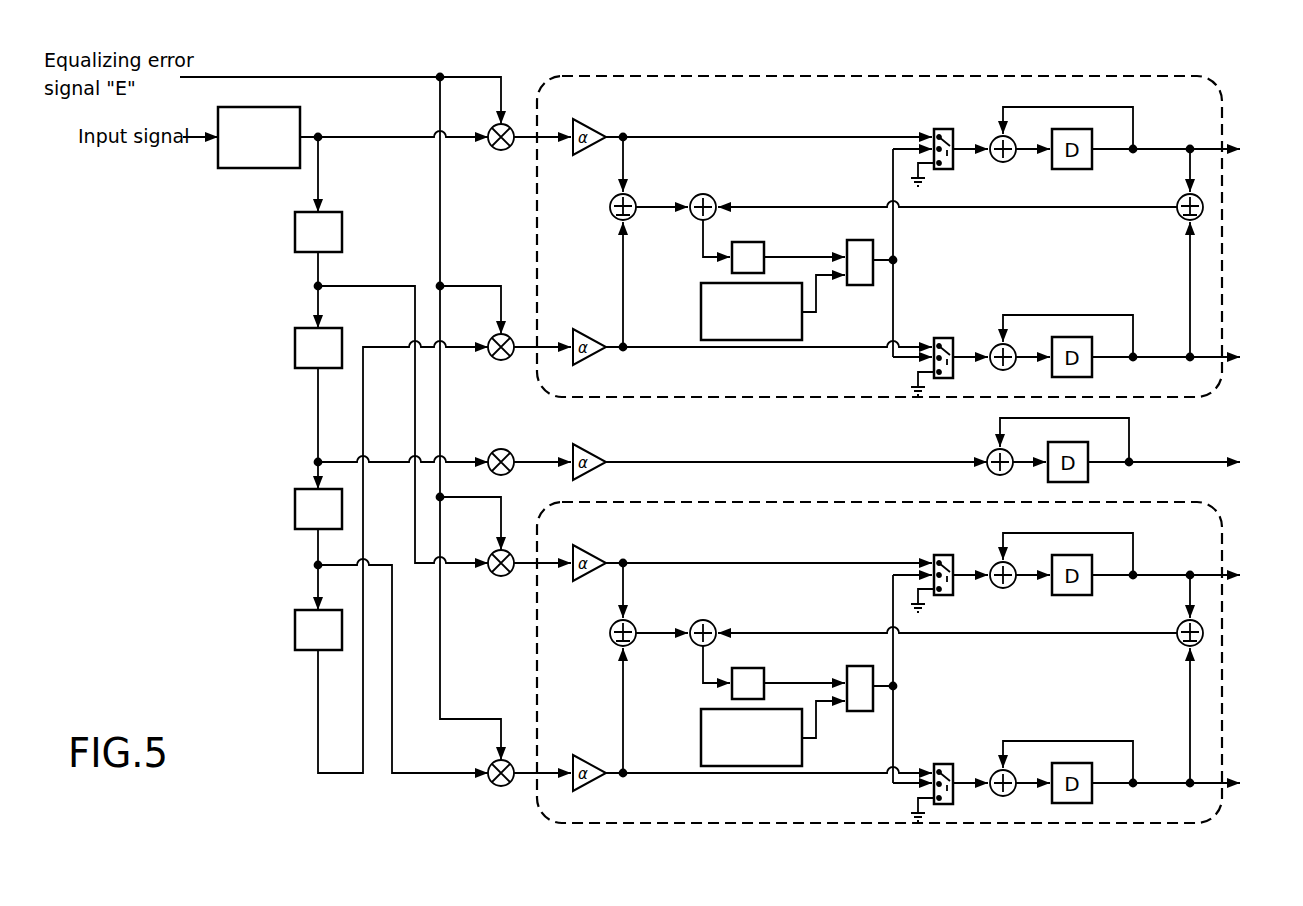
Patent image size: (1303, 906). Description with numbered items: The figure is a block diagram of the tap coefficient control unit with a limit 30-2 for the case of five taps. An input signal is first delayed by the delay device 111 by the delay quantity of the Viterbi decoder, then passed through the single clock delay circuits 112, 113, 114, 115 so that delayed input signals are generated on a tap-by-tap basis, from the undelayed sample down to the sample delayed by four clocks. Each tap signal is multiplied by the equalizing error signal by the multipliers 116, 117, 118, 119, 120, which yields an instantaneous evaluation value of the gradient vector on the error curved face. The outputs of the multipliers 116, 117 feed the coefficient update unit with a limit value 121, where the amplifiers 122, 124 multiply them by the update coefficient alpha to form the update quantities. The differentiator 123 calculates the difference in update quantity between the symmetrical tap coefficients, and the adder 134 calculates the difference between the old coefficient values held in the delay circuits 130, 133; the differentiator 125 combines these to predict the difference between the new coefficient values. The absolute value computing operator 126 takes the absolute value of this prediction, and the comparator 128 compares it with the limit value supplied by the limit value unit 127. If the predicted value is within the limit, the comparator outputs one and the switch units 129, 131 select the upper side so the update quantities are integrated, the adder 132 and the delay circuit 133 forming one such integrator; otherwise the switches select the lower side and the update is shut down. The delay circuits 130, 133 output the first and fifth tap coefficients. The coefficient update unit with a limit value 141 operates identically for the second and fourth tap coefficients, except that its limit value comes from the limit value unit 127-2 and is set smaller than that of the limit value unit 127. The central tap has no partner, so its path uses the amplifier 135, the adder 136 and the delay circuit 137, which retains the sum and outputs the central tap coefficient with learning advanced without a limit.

The even numbered tap coefficient control 30-2 is at (528, 62).
The delay device 111 is at (301, 116).
The single clock delay circuit 112 is at (295, 232).
The single clock delay circuit 113 is at (295, 348).
The single clock delay circuit 114 is at (295, 509).
The single clock delay circuit 115 is at (295, 630).
The multiplier circuit 116 is at (501, 150).
The multiplier circuit 117 is at (501, 360).
The multiplier 118 is at (510, 453).
The multiplier 119 is at (501, 576).
The multiplier 120 is at (492, 784).
The coefficient update unit with limit value 121 is at (1222, 250).
The amplifier 122 is at (583, 156).
The differentiator 123 is at (636, 196).
The amplifier 124 is at (583, 328).
The differentiator 125 is at (714, 196).
The absolute value computing operator 126 is at (730, 263).
The limit value unit 127 is at (701, 312).
The limit value unit 127-2 is at (701, 738).
The comparator 128 is at (860, 286).
The switch unit 129 is at (953, 166).
The delay circuit 130 is at (1092, 166).
The switch unit 131 is at (943, 338).
The adder 132 is at (1012, 346).
The delay circuit 133 is at (1072, 338).
The adder 134 is at (1178, 216).
The amplifier 135 is at (620, 436).
The adder 136 is at (991, 451).
The delay circuit 137 is at (1088, 451).
The coefficient update unit with limit value 141 is at (1222, 676).